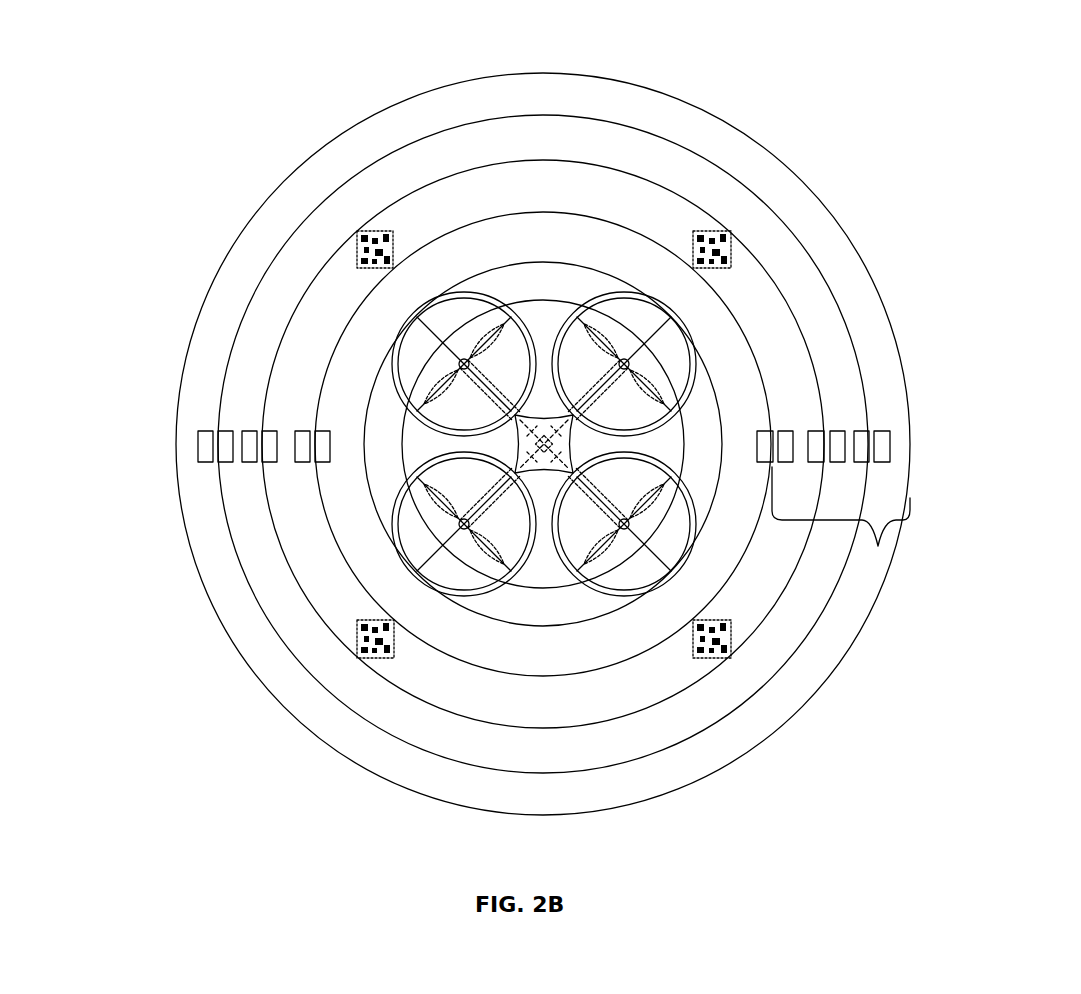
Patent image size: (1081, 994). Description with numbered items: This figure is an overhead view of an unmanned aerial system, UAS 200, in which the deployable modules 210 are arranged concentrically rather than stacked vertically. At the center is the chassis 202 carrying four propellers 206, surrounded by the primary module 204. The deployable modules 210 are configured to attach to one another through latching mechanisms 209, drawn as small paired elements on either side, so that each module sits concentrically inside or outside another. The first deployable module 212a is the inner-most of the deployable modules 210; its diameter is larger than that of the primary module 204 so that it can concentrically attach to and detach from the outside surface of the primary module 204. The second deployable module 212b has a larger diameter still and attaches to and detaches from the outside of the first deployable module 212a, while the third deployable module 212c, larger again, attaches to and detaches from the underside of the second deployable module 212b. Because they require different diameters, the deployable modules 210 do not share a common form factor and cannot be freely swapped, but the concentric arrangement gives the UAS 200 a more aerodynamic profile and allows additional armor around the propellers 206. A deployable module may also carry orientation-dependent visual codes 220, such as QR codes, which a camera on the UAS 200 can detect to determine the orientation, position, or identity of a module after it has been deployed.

The UAS 200 is at (236, 60).
The chassis 202 is at (524, 472).
The primary module 204 is at (443, 632).
The propellers 206 is at (404, 326).
The latching mechanisms 209 is at (306, 426).
The deployable modules 210 is at (882, 547).
The first deployable module 212a is at (606, 686).
The second deployable module 212b is at (774, 658).
The third deployable module 212c is at (743, 728).
The visual codes 220 is at (362, 231).